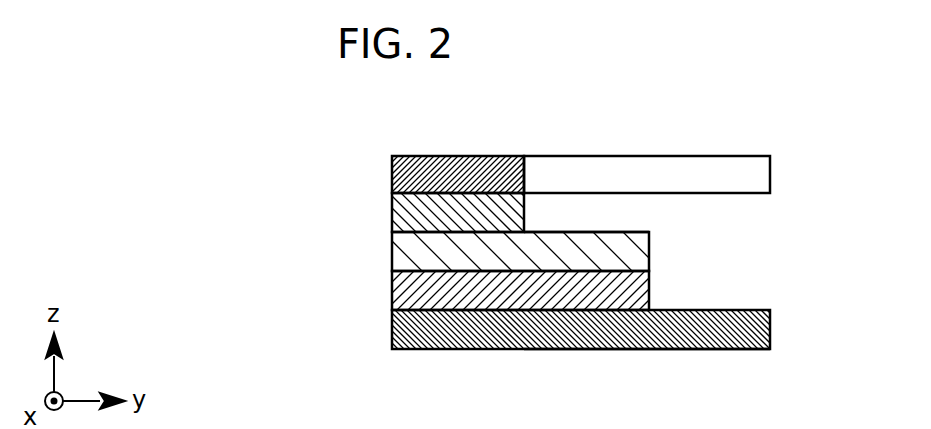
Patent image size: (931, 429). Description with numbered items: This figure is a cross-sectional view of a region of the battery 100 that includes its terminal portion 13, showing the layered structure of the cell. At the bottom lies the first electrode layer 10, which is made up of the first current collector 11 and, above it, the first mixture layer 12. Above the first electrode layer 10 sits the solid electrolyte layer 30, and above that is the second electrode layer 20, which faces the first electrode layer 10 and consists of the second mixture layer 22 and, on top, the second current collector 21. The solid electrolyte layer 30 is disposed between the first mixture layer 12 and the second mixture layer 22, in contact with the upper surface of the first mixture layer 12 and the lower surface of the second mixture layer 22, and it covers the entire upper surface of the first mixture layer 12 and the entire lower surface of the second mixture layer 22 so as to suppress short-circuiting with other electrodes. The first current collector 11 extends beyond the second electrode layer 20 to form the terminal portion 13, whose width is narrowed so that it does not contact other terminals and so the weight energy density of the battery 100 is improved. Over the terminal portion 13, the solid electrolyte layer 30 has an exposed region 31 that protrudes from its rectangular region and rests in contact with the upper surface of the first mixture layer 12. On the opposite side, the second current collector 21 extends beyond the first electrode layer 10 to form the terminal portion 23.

The battery 100 is at (237, 168).
The second electrode layer 20 is at (302, 151).
The second current collector 21 is at (405, 174).
The second mixture layer 22 is at (405, 213).
The terminal portion 23 is at (770, 148).
The solid electrolyte layer 30 is at (405, 249).
The exposed region 31 is at (617, 231).
The first electrode layer 10 is at (302, 268).
The first mixture layer 12 is at (405, 293).
The first current collector 11 is at (405, 326).
The terminal portion 13 is at (770, 353).